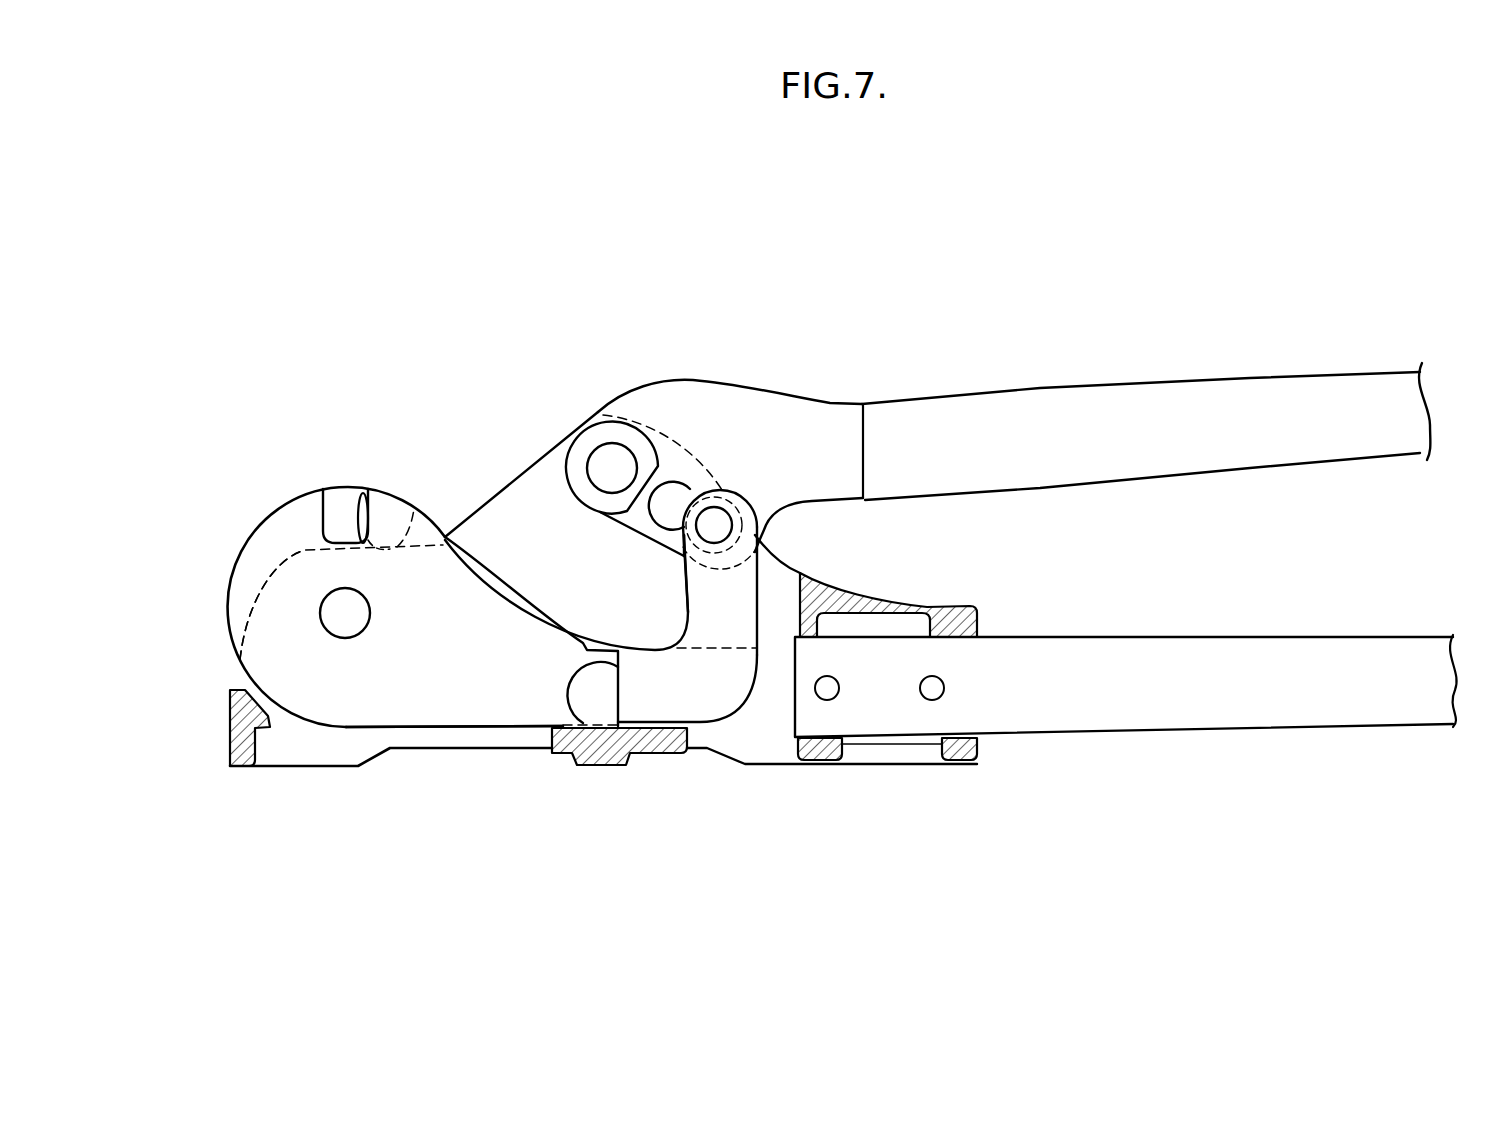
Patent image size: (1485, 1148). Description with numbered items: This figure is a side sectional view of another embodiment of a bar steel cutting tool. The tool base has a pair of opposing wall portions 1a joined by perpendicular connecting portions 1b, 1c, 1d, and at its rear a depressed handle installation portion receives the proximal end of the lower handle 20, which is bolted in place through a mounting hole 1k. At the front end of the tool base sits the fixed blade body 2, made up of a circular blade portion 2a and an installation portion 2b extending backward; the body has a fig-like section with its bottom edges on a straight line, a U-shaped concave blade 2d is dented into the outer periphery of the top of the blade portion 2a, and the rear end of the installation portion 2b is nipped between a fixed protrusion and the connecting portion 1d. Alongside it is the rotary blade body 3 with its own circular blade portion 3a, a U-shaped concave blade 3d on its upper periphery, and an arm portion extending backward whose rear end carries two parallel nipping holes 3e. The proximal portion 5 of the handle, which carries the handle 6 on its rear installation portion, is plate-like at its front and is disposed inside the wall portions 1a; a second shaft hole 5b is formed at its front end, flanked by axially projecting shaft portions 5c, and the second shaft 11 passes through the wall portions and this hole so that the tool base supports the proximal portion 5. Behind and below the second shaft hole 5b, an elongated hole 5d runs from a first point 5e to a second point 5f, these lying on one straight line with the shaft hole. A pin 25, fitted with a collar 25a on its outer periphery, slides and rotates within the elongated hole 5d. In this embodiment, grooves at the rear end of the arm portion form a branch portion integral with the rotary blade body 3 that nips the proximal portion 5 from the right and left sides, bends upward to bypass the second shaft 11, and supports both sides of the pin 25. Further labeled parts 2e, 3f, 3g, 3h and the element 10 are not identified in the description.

The wall portion 1a is at (500, 557).
The connecting portion 1b is at (242, 743).
The connecting portion 1c is at (518, 493).
The connecting portion 1d is at (608, 752).
The mounting hole 1k is at (930, 697).
The fixed blade body 2 is at (232, 541).
The blade portion 2a is at (278, 533).
The installation portion 2b is at (555, 750).
The concave blade 2d is at (370, 500).
The slider bottom surface 2e is at (342, 640).
The rotary blade body 3 is at (221, 590).
The blade portion 3a is at (343, 513).
The concave blade 3d is at (360, 515).
The nipping hole 3e is at (385, 830).
The lever lower arm 3f is at (710, 690).
The lever lower end 3g is at (720, 618).
The lever outer edge 3h is at (760, 535).
The proximal portion of the handle 5 is at (817, 433).
The second shaft hole 5b is at (572, 427).
The shaft portion 5c is at (575, 478).
The elongated hole 5d is at (715, 522).
The first point 5e is at (675, 503).
The second point 5f is at (733, 500).
The handle 6 is at (1168, 437).
The hole 10 is at (325, 640).
The second shaft 11 is at (612, 466).
The lower handle 20 is at (1168, 688).
The pin 25 is at (737, 505).
The collar 25a is at (705, 530).